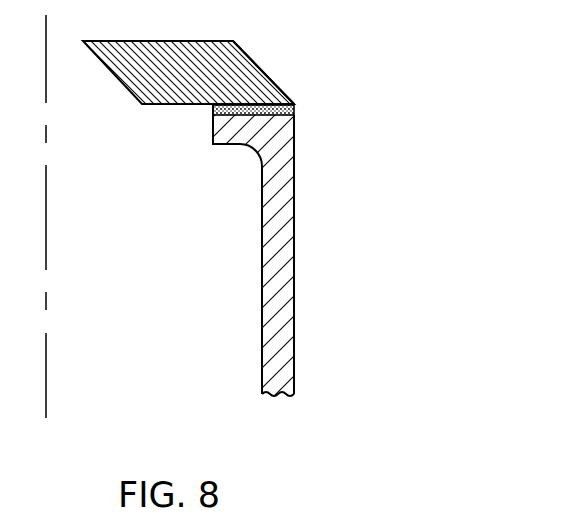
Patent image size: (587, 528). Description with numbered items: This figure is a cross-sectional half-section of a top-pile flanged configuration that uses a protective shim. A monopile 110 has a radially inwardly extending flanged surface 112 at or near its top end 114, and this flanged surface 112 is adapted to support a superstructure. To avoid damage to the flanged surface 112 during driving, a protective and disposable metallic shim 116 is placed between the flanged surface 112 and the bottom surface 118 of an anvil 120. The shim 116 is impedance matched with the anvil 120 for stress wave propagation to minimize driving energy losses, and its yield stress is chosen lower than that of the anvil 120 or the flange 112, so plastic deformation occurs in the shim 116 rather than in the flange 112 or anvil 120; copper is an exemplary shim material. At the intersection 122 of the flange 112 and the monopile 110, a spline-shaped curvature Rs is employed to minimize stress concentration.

The monopile 110 is at (291, 212).
The flanged surface 112 is at (226, 123).
The top end 114 is at (299, 108).
The metallic shim 116 is at (280, 124).
The bottom surface 118 is at (290, 99).
The anvil 120 is at (243, 76).
The intersection 122 is at (256, 148).
The spline-shaped curvature Rs is at (249, 150).